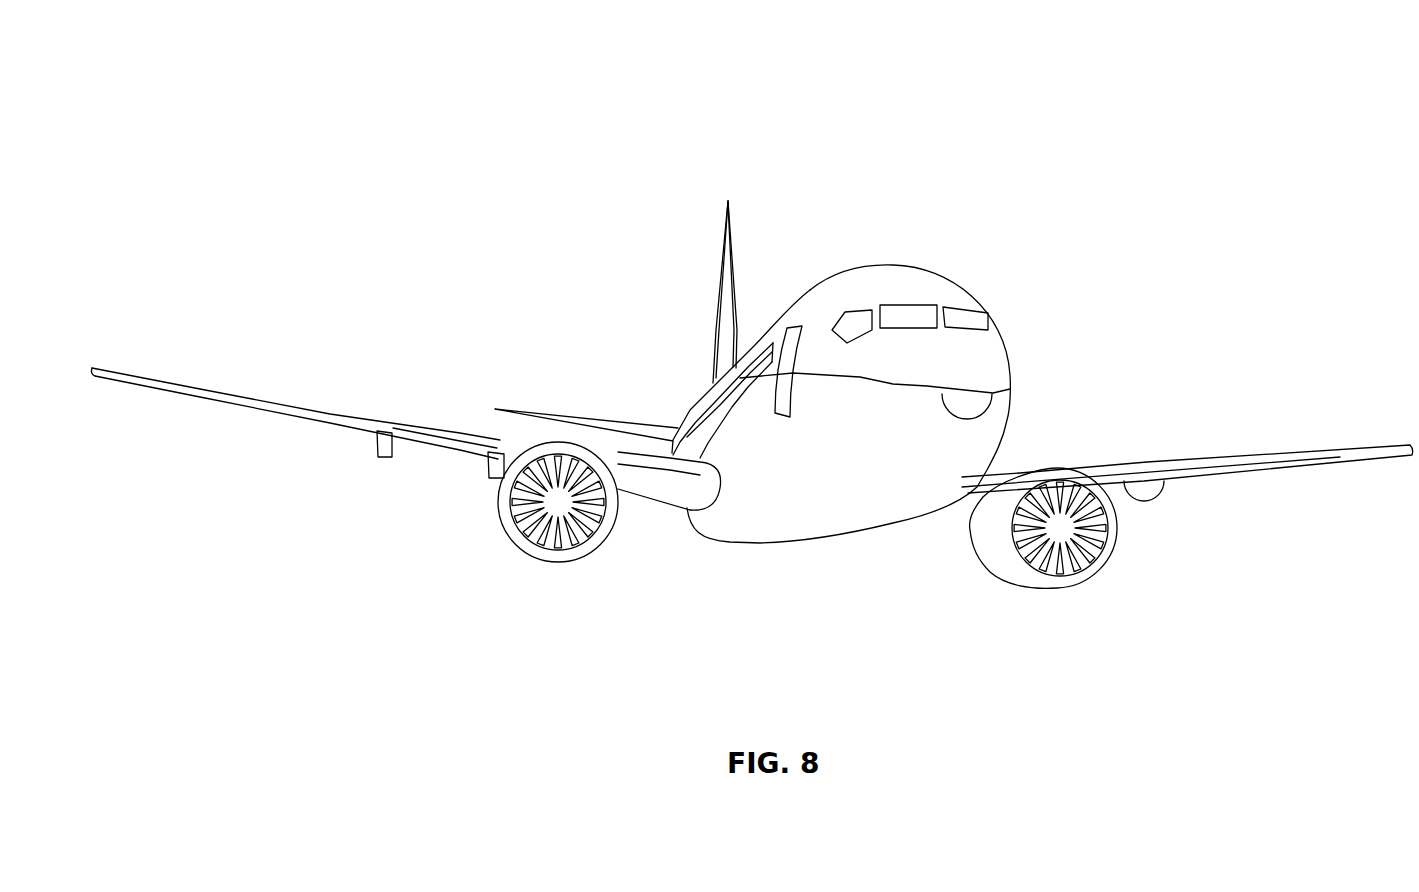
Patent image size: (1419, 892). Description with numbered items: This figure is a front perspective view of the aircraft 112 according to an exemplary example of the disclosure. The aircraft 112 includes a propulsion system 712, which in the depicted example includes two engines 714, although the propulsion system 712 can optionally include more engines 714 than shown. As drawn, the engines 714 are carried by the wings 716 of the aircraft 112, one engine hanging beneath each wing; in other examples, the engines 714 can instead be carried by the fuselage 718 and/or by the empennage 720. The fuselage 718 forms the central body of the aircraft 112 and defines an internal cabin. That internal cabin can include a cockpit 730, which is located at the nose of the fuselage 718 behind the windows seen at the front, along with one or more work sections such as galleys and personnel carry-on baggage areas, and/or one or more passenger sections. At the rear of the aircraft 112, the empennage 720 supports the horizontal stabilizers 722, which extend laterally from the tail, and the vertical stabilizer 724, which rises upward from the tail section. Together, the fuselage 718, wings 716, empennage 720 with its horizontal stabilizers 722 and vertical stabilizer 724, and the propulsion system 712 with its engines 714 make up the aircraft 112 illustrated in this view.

The aircraft 112 is at (420, 126).
The propulsion system 712 is at (1143, 556).
The engines 714 is at (553, 563).
The wings 716 is at (270, 402).
The fuselage 718 is at (1013, 397).
The empennage 720 is at (712, 388).
The horizontal stabilizers 722 is at (548, 413).
The vertical stabilizer 724 is at (723, 254).
The cockpit 730 is at (907, 317).